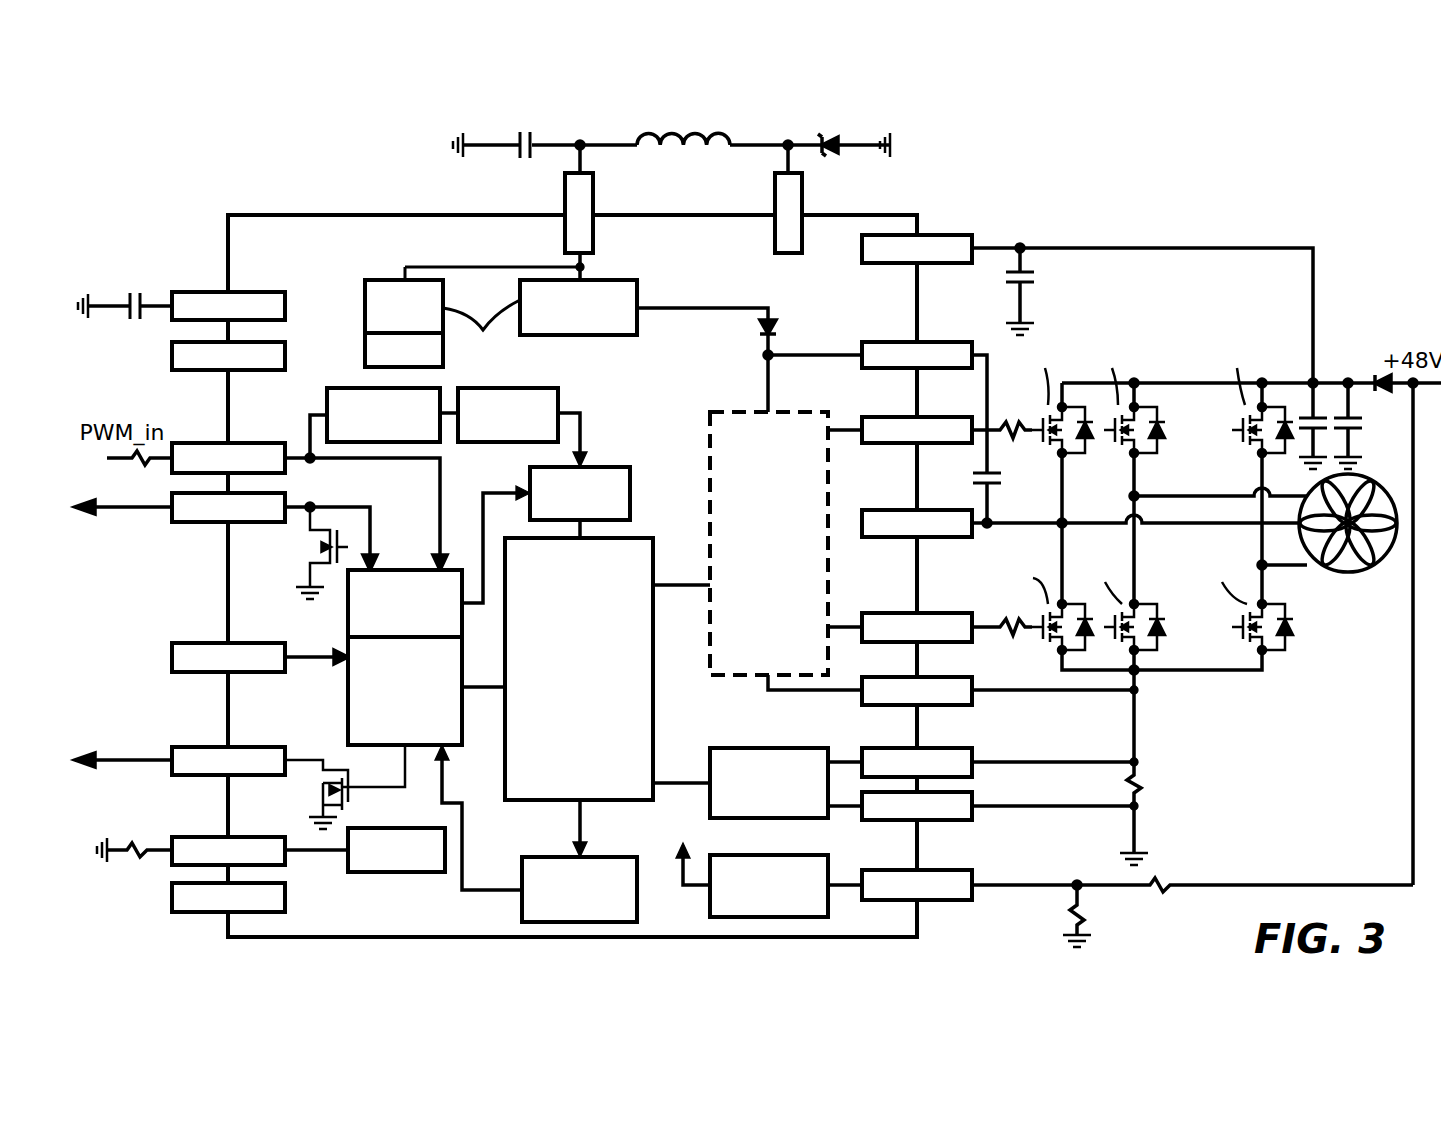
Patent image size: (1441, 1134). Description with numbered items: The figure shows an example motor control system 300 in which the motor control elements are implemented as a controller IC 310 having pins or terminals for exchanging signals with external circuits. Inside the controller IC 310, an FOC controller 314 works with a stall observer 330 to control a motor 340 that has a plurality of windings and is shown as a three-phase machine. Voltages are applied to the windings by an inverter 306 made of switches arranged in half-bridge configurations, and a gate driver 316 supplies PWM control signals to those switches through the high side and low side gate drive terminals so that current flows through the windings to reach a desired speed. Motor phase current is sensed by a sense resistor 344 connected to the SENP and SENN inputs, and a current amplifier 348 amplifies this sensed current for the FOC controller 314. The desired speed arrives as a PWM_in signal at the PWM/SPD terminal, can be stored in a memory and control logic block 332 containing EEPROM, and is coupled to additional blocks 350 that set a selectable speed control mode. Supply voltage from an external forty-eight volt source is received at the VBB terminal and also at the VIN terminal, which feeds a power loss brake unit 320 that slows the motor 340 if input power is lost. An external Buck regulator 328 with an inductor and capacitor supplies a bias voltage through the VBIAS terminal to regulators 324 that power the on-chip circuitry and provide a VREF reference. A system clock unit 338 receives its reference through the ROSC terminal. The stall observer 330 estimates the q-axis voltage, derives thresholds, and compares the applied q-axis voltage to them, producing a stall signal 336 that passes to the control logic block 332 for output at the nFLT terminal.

The motor control system 300 is at (1252, 184).
The inverter 306 is at (1140, 366).
The controller IC 310 is at (866, 213).
The FOC controller 314 is at (607, 697).
The gate driver 316 is at (730, 412).
The power loss brake unit 320 is at (755, 855).
The regulators 324 is at (501, 315).
The Buck regulator 328 is at (634, 126).
The stall observer 330 is at (522, 917).
The memory and control logic block 332 is at (398, 570).
The stall signal 336 is at (462, 835).
The system clock unit 338 is at (365, 872).
The motor 340 is at (1352, 573).
The sense resistor 344 is at (1143, 778).
The current amplifier 348 is at (755, 748).
The additional blocks 350 is at (633, 395).